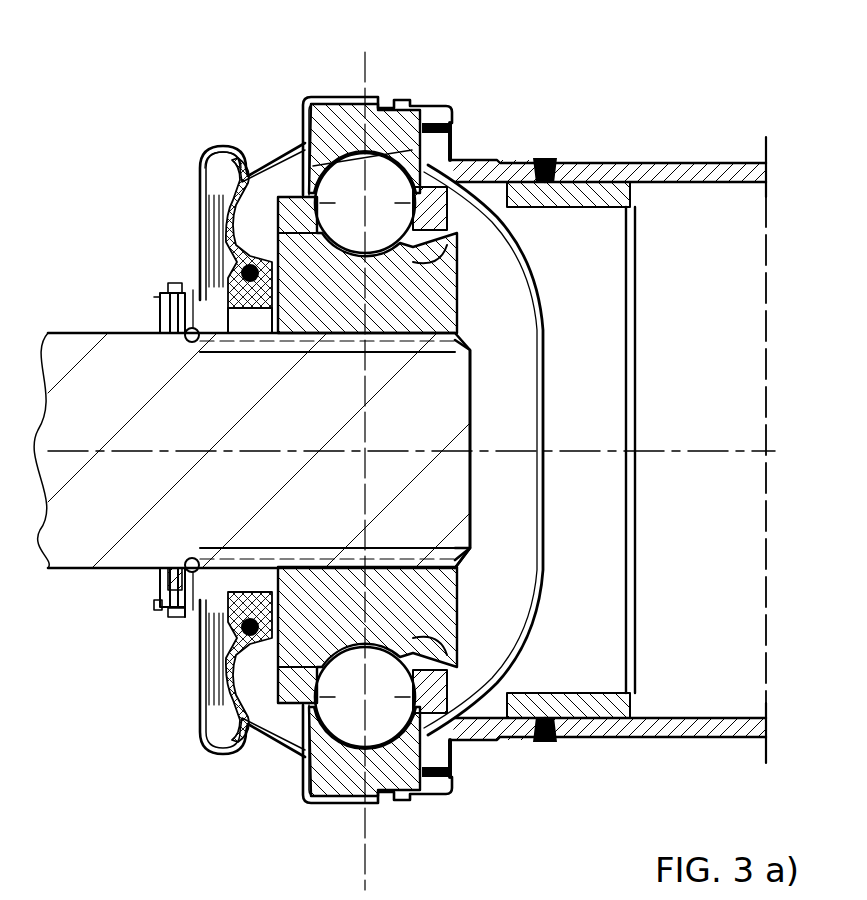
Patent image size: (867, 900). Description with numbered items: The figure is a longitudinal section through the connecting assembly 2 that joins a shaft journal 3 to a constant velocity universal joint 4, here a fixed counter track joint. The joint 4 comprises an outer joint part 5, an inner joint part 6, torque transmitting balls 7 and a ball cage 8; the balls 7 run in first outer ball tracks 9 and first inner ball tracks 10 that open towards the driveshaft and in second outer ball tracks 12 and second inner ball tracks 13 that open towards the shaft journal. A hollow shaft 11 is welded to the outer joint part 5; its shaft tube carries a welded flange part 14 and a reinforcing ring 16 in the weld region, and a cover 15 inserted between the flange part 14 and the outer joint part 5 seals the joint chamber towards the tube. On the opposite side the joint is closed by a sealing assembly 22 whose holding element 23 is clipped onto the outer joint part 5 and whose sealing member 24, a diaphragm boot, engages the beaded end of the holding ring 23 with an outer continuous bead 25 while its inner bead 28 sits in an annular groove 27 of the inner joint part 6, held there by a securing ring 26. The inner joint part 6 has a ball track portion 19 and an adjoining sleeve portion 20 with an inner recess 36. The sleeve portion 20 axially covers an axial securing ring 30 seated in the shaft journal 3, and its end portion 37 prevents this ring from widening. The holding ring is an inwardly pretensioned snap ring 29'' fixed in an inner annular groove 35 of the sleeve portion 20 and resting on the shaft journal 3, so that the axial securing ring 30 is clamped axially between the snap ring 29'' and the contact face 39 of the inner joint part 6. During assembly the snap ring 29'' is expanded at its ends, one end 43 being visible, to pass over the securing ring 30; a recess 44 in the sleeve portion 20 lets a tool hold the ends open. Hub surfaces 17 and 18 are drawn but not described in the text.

The connecting assembly 2 is at (90, 115).
The shaft journal 3 is at (68, 333).
The constant velocity universal joint 4 is at (366, 75).
The outer joint part 5 is at (410, 130).
The inner joint part 6 is at (445, 322).
The torque transmitting balls 7 is at (378, 180).
The ball cage 8 is at (452, 153).
The first outer ball tracks 9 is at (430, 170).
The first inner ball tracks 10 is at (430, 264).
The hollow shaft 11 is at (668, 160).
The second outer ball tracks 12 is at (325, 745).
The second inner ball tracks 13 is at (288, 740).
The flange part 14 is at (478, 732).
The cover 15 is at (545, 342).
The reinforcing ring 16 is at (590, 697).
The hub chamfer 17 is at (447, 548).
The hub 18 is at (450, 405).
The ball track portion 19 is at (342, 323).
The sleeve portion 20 is at (258, 283).
The sealing assembly 22 is at (265, 143).
The holding element 23 is at (320, 97).
The sealing member 24 is at (198, 195).
The outer continuous bead 25 is at (215, 150).
The securing ring 26 is at (212, 230).
The annular groove 27 is at (243, 592).
The inner bead 28 is at (236, 333).
The snap ring 29'' is at (172, 563).
The axial securing ring 30 is at (192, 343).
The inner annular groove 35 is at (155, 600).
The inner recess 36 is at (152, 583).
The end portion 37 is at (184, 610).
The contact face 39 is at (194, 558).
The end of snap ring 43 is at (170, 290).
The recess 44 is at (155, 298).